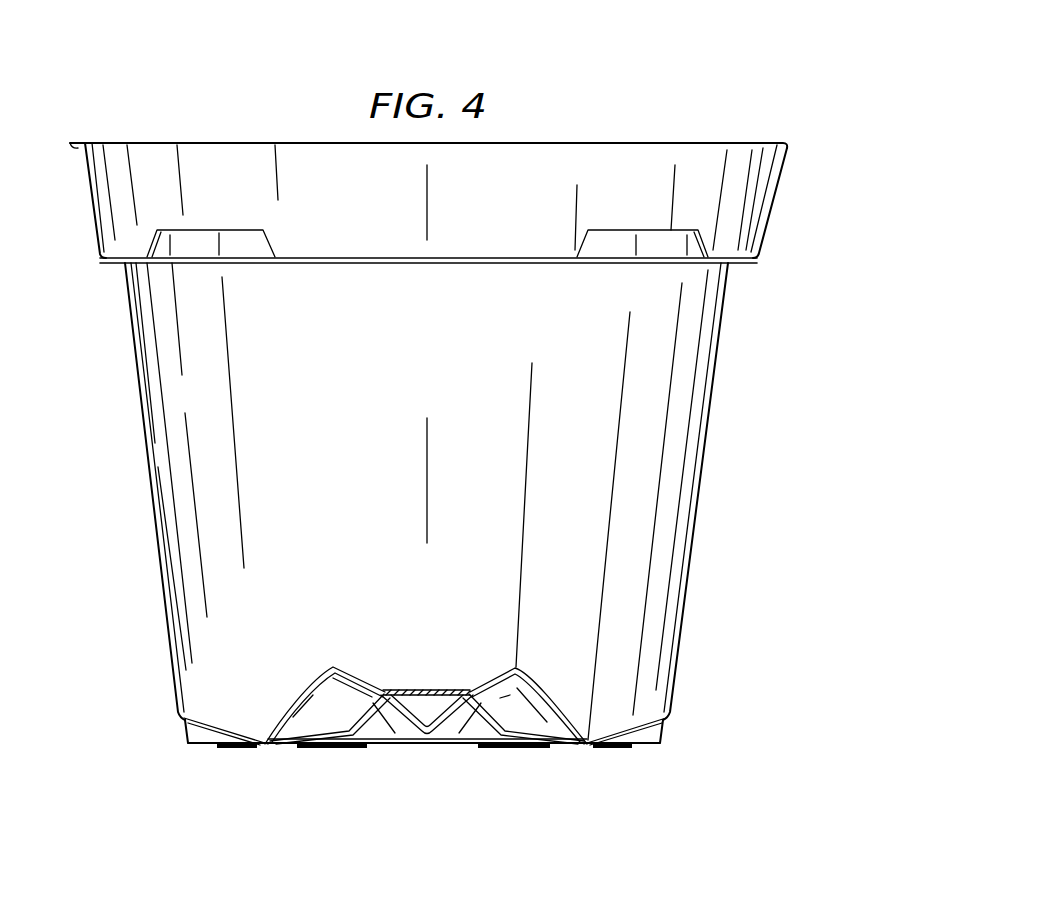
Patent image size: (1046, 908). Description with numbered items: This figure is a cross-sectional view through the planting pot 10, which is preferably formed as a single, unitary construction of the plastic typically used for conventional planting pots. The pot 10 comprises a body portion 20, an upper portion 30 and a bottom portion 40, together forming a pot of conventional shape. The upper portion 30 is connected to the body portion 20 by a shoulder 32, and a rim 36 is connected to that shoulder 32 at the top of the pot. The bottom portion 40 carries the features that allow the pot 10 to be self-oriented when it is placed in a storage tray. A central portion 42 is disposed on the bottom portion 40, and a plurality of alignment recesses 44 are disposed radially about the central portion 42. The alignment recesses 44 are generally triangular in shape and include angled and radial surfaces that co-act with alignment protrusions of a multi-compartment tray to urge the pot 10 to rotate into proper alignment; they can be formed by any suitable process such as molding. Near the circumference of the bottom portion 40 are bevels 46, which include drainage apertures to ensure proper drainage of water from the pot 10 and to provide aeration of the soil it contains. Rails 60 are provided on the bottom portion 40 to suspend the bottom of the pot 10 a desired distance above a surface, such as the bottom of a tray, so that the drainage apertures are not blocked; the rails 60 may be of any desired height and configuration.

The planting pot 10 is at (767, 79).
The body portion 20 is at (750, 280).
The upper portion 30 is at (790, 145).
The shoulder 32 is at (100, 265).
The rim 36 is at (90, 190).
The bottom portion 40 is at (564, 785).
The central portion 42 is at (413, 728).
The alignment recesses 44 is at (369, 718).
The bevels 46 is at (175, 742).
The rails 60 is at (232, 750).